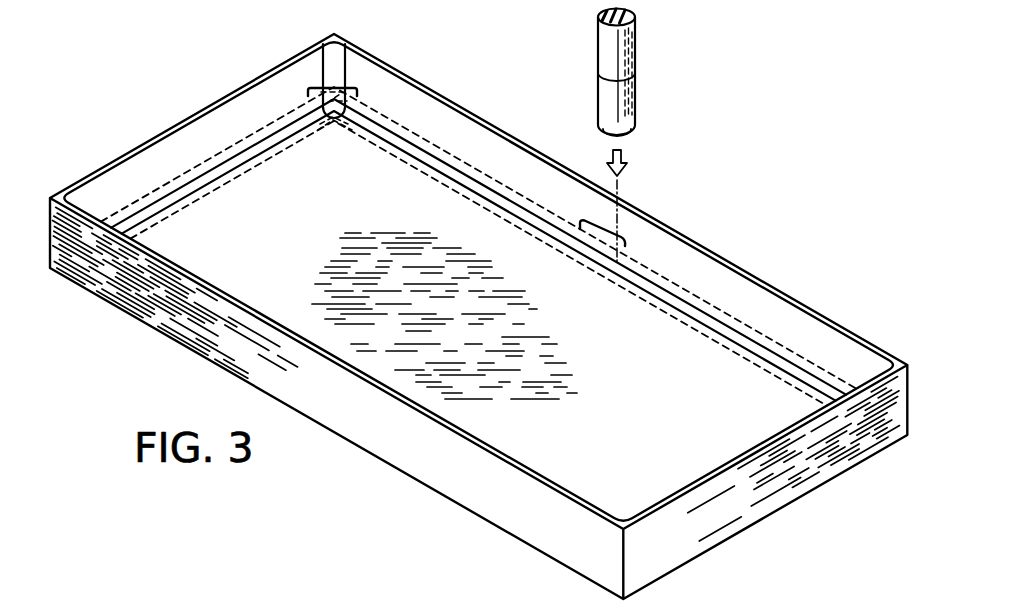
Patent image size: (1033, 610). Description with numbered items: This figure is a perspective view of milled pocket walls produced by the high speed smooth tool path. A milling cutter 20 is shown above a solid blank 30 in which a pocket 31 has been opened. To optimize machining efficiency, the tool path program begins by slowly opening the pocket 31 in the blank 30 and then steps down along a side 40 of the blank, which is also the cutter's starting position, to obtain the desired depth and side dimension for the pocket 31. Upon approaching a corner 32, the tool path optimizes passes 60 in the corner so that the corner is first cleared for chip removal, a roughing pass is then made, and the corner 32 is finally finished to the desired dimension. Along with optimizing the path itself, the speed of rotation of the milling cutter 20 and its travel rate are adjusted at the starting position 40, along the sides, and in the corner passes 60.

The milling cutter 20 is at (660, 51).
The solid blank 30 is at (775, 294).
The pocket 31 is at (730, 268).
The corner 32 is at (322, 45).
The side of the blank 40 is at (613, 224).
The passes in the corner 60 is at (332, 87).